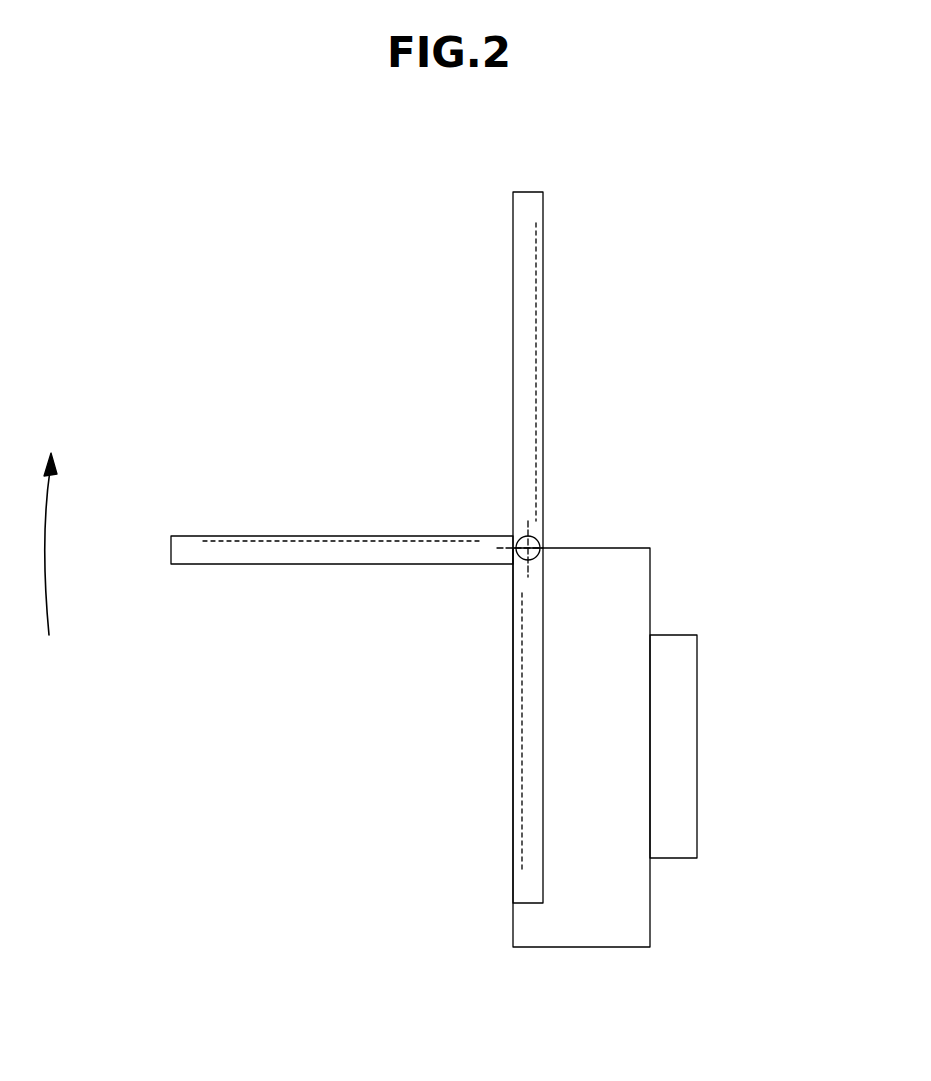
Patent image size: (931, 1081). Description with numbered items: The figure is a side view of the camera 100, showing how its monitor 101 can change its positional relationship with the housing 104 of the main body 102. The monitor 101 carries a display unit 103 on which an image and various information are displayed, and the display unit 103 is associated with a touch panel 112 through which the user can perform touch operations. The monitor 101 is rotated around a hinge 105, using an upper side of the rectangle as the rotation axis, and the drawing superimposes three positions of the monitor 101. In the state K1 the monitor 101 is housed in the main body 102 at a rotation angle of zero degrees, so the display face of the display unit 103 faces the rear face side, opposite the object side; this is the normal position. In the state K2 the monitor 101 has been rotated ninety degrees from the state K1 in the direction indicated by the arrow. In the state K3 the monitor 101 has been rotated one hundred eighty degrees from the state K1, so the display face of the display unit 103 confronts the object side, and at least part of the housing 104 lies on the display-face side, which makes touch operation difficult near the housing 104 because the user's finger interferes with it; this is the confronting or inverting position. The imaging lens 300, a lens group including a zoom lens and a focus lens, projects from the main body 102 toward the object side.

The camera 100 is at (724, 277).
The monitor 101 is at (545, 211).
The display unit 103 is at (442, 546).
The touch panel 112 is at (545, 355).
The housing 104 is at (595, 717).
The main body 102 is at (612, 547).
The hinge 105 is at (537, 552).
The imaging lens 300 is at (683, 718).
The state K1 is at (528, 903).
The state K2 is at (171, 549).
The state K3 is at (528, 192).